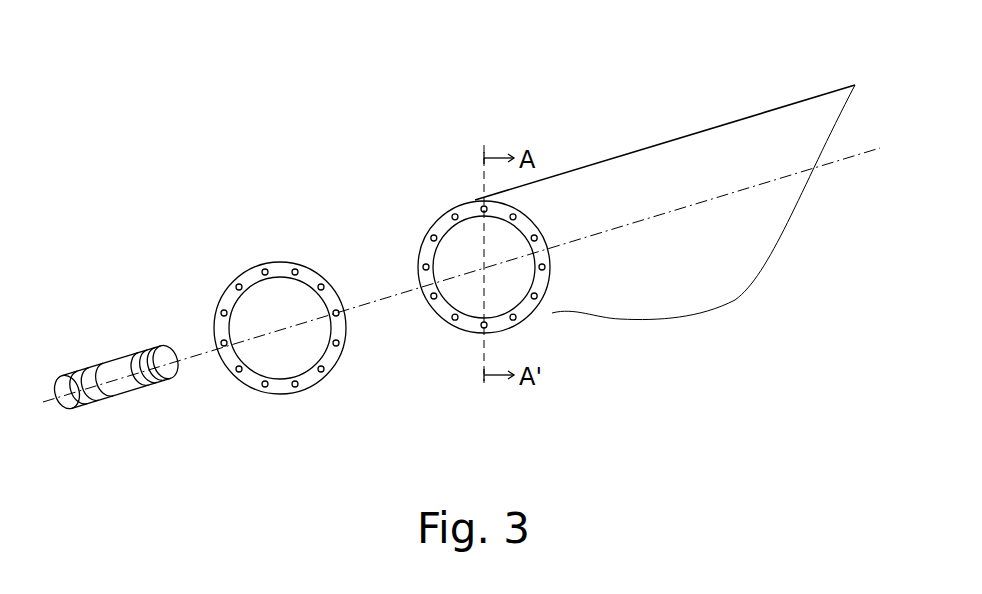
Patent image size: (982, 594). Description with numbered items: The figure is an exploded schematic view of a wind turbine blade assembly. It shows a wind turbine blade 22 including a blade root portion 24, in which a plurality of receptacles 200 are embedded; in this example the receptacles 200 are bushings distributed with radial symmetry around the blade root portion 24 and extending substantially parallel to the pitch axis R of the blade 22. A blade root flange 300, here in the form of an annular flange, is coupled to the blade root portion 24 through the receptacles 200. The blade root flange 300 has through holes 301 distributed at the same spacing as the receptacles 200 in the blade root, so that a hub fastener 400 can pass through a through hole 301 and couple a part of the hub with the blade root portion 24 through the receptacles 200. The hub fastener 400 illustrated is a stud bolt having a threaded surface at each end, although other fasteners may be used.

The wind turbine blade 22 is at (762, 130).
The blade root portion 24 is at (558, 298).
The pitch axis R is at (833, 162).
The receptacles 200 is at (523, 212).
The blade root flange 300 is at (279, 319).
The through holes 301 is at (297, 395).
The hub fastener 400 is at (113, 333).